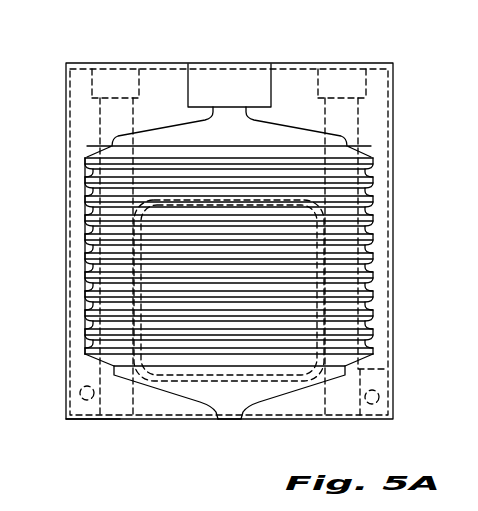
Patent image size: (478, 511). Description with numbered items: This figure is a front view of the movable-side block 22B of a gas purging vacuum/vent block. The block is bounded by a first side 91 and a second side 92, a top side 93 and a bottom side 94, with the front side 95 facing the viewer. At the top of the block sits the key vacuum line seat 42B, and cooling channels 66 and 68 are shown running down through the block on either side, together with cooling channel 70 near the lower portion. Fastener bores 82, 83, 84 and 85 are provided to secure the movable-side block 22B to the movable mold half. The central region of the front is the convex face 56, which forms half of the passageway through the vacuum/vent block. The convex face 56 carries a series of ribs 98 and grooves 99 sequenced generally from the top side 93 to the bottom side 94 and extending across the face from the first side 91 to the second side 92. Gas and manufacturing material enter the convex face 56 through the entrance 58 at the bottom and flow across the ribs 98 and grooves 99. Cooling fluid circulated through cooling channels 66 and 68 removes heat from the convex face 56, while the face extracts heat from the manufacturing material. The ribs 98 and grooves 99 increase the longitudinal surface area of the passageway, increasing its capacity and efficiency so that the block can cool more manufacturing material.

The movable-side block 22B is at (378, 83).
The key vacuum line seat 42B is at (212, 97).
The convex face 56 is at (298, 238).
The entrance 58 is at (228, 432).
The cooling channel 66 is at (340, 108).
The cooling channel 68 is at (123, 115).
The cooling channel 70 is at (376, 359).
The fastener bore 82 is at (94, 398).
The fastener bore 83 is at (378, 399).
The fastener bore 84 is at (267, 256).
The fastener bore 85 is at (87, 227).
The first side 91 is at (65, 115).
The second side 92 is at (396, 80).
The top side 93 is at (87, 63).
The bottom side 94 is at (115, 434).
The front side 95 is at (372, 123).
The rib 98 is at (267, 256).
The groove 99 is at (384, 300).